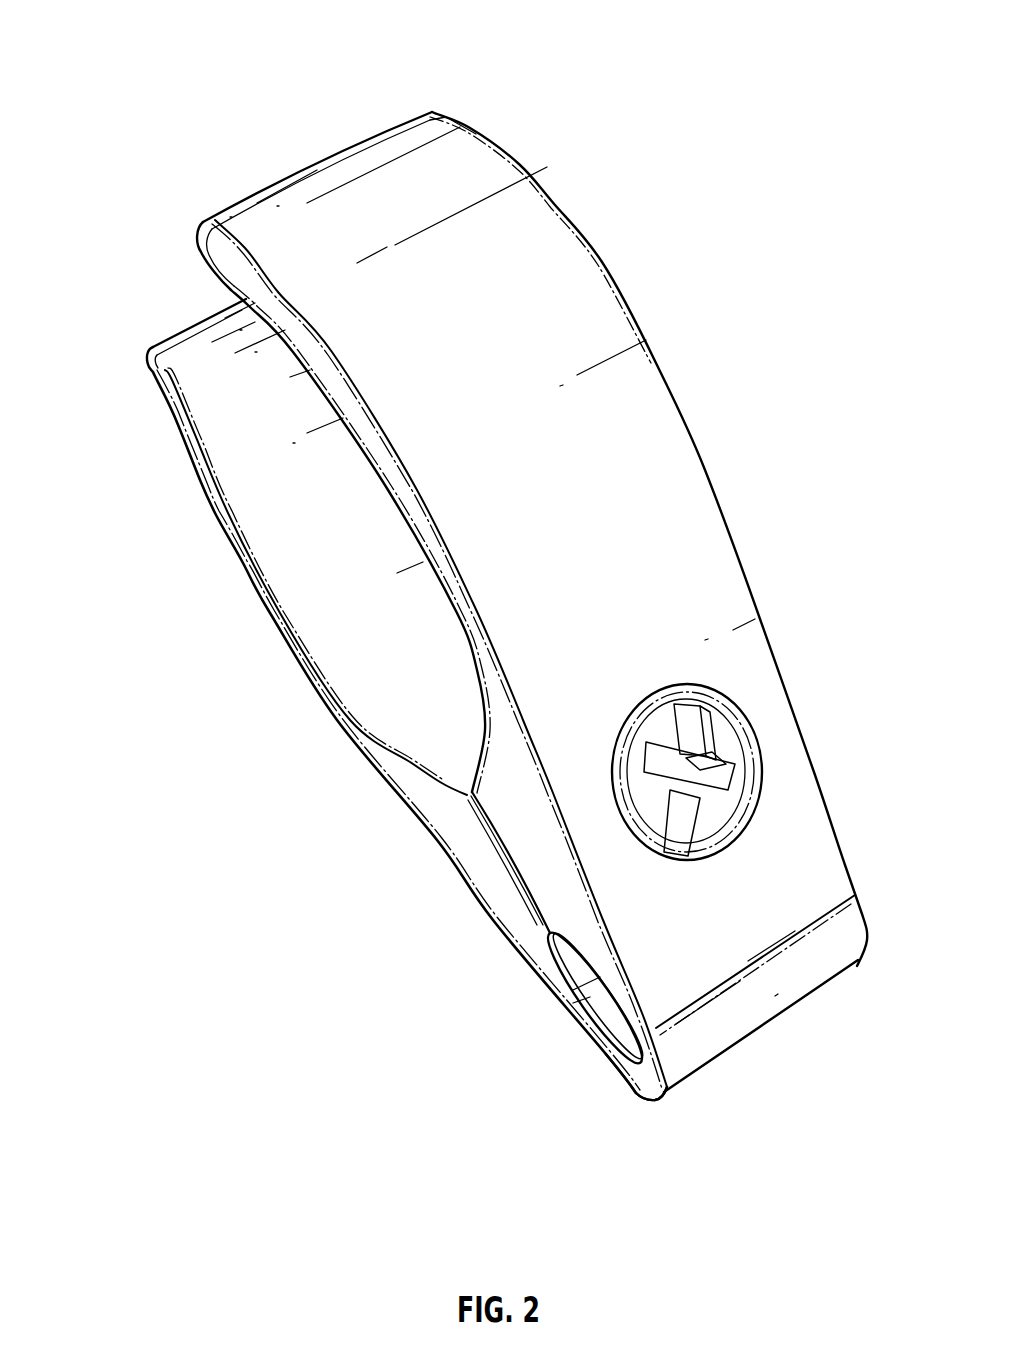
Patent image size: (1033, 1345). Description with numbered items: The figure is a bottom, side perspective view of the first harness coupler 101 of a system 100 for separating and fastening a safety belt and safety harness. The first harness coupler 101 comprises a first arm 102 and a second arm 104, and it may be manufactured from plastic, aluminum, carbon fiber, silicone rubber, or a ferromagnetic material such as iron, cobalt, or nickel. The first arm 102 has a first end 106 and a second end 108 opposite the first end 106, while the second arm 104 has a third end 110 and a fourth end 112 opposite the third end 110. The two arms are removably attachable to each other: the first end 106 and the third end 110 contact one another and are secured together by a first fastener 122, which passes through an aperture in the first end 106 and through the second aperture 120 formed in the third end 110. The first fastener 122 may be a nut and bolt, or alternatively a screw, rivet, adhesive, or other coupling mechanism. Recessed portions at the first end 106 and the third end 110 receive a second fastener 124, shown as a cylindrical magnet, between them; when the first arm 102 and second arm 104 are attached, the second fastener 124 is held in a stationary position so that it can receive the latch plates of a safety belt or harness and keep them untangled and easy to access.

The system 100 is at (236, 36).
The first harness coupler 101 is at (648, 392).
The first arm 102 is at (247, 512).
The second arm 104 is at (537, 222).
The first end 106 is at (620, 1058).
The second end 108 is at (156, 364).
The third end 110 is at (806, 957).
The fourth end 112 is at (452, 108).
The second aperture 120 is at (746, 813).
The first fastener 122 is at (712, 783).
The second fastener 124 is at (590, 977).